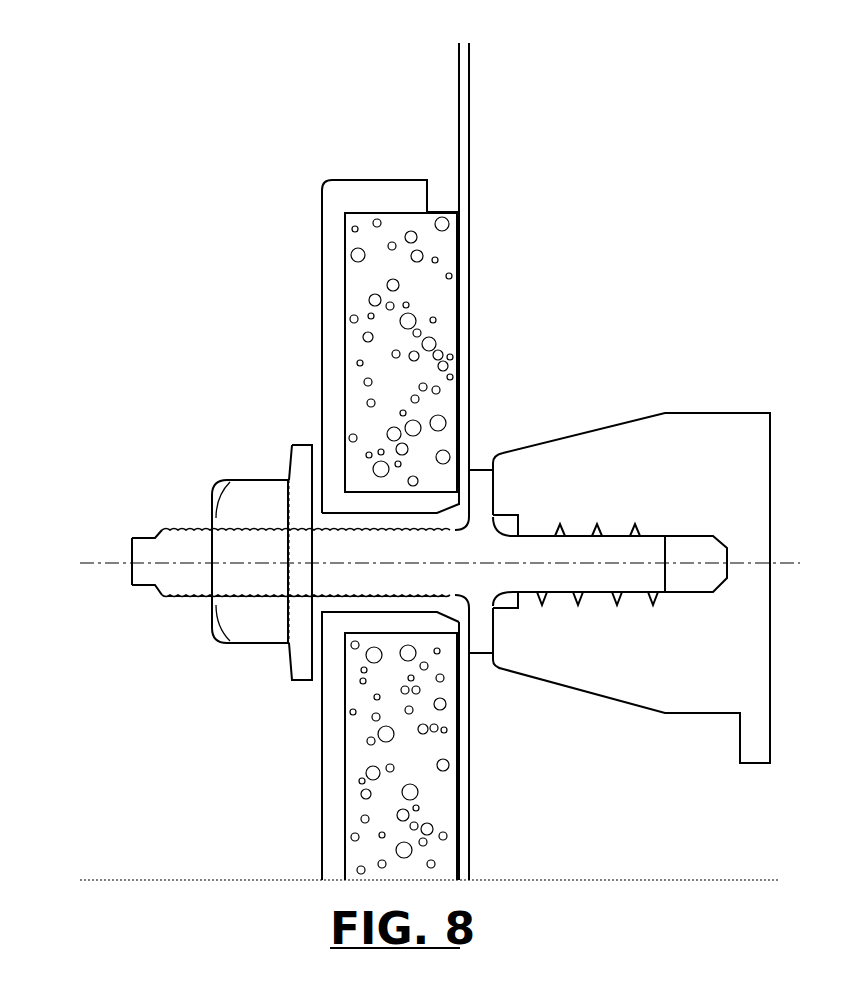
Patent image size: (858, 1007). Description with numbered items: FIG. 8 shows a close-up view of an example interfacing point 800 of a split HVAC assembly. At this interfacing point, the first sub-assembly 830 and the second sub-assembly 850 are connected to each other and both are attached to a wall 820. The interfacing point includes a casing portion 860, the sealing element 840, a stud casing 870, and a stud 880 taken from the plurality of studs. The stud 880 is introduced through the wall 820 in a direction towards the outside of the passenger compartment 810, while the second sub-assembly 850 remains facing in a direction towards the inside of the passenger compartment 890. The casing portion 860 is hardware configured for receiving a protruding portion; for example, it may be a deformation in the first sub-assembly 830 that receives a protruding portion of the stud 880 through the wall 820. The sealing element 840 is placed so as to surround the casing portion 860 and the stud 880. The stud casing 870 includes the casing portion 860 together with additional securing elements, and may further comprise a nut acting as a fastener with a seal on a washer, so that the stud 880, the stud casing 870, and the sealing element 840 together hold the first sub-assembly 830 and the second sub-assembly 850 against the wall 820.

The fastening assembly 800 is at (84, 51).
The direction towards the outside of the passenger compartment 810 is at (236, 92).
The wall 820 is at (471, 205).
The first sub-assembly 830 is at (319, 325).
The sealing element 840 is at (446, 372).
The second sub-assembly 850 is at (646, 470).
The casing portion 860 is at (317, 487).
The stud casing 870 is at (284, 645).
The stud 880 is at (484, 661).
The direction towards the inside of the passenger compartment 890 is at (701, 840).